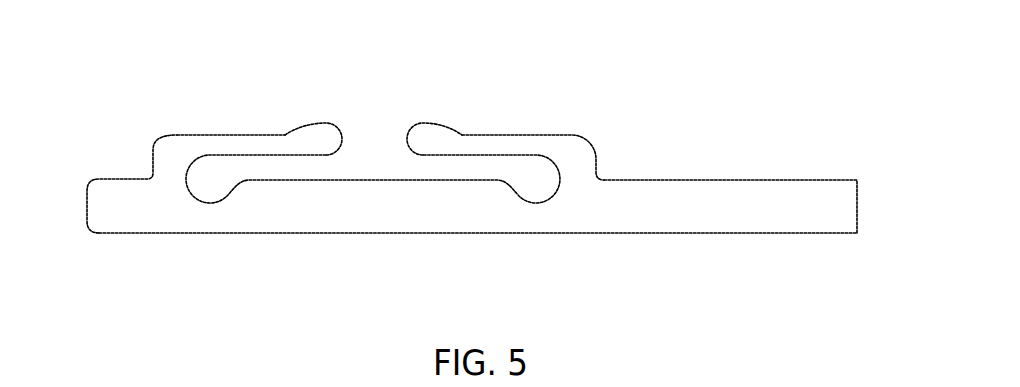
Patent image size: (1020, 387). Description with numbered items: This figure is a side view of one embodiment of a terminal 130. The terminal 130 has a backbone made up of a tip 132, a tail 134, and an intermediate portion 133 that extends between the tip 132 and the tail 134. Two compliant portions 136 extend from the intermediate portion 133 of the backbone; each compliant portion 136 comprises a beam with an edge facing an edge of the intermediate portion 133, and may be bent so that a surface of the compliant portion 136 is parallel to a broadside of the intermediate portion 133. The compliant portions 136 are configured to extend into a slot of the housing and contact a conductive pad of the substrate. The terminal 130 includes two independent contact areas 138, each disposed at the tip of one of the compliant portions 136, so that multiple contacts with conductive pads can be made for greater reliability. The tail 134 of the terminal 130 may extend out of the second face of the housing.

The terminal 130 is at (760, 45).
The tip 132 is at (111, 255).
The intermediate portion 133 is at (369, 255).
The tail 134 is at (837, 255).
The compliant portion 136 is at (505, 133).
The contact area 138 is at (428, 105).